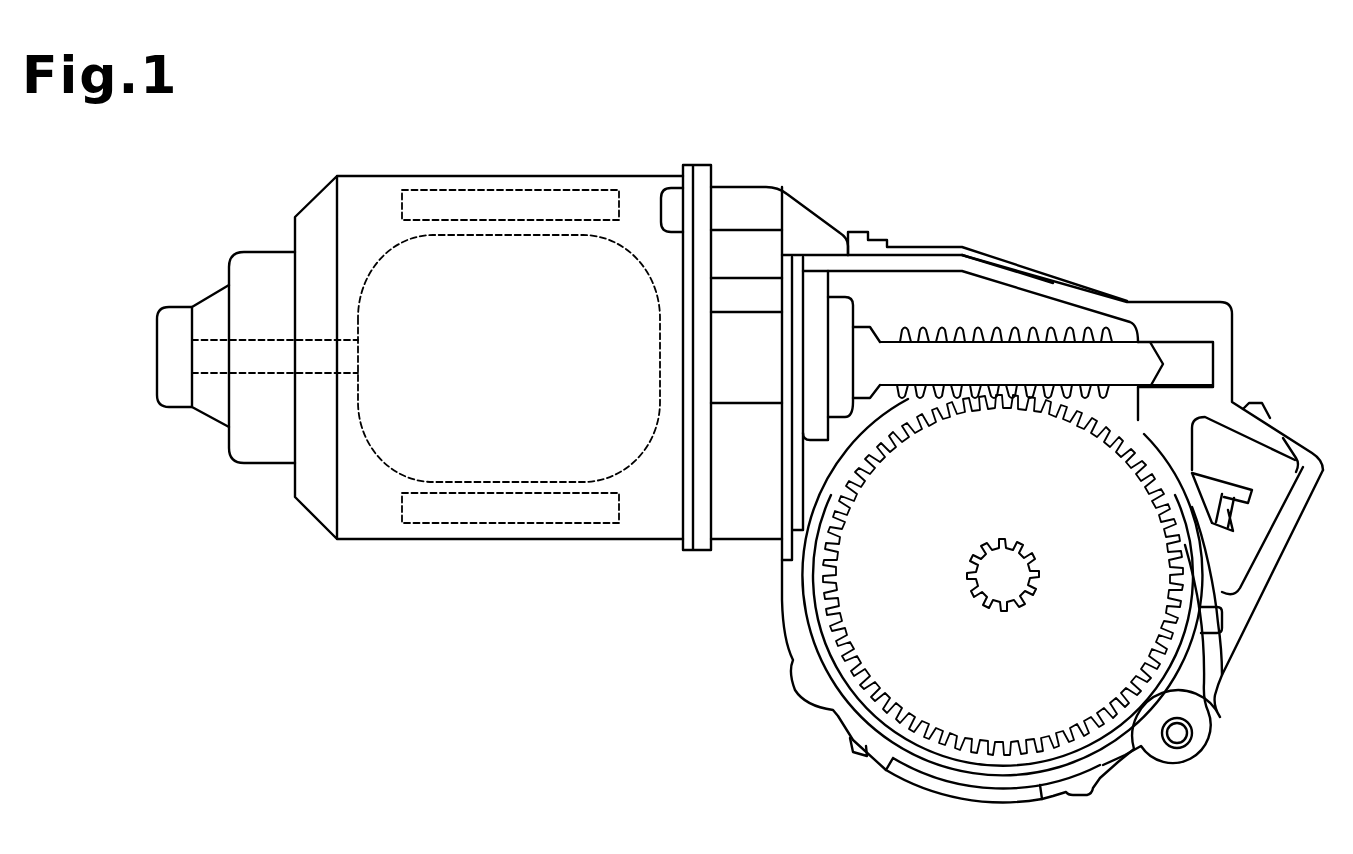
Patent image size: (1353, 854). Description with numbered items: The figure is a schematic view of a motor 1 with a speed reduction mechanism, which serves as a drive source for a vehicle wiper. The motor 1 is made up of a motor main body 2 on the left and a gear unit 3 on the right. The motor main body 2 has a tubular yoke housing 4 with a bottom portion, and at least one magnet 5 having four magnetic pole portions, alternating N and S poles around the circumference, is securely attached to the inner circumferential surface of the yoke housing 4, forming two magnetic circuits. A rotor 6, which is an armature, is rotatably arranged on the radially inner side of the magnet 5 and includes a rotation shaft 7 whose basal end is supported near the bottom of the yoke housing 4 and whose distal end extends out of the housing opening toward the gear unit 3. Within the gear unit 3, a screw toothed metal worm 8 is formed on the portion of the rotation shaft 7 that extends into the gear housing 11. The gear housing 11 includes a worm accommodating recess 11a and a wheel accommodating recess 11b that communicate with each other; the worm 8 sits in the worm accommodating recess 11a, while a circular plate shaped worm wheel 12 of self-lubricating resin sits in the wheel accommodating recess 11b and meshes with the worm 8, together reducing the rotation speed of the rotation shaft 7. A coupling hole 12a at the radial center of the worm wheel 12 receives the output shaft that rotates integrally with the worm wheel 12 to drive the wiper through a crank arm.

The motor 1 is at (687, 688).
The motor main body 2 is at (604, 600).
The gear unit 3 is at (748, 661).
The yoke housing 4 is at (368, 539).
The magnet 5 is at (491, 190).
The rotor 6 is at (638, 455).
The rotation shaft 7 is at (262, 373).
The worm 8 is at (972, 332).
The gear housing 11 is at (878, 762).
The worm accommodating recess 11a is at (1055, 315).
The wheel accommodating recess 11b is at (931, 745).
The worm wheel 12 is at (1165, 637).
The coupling hole 12a is at (1024, 558).